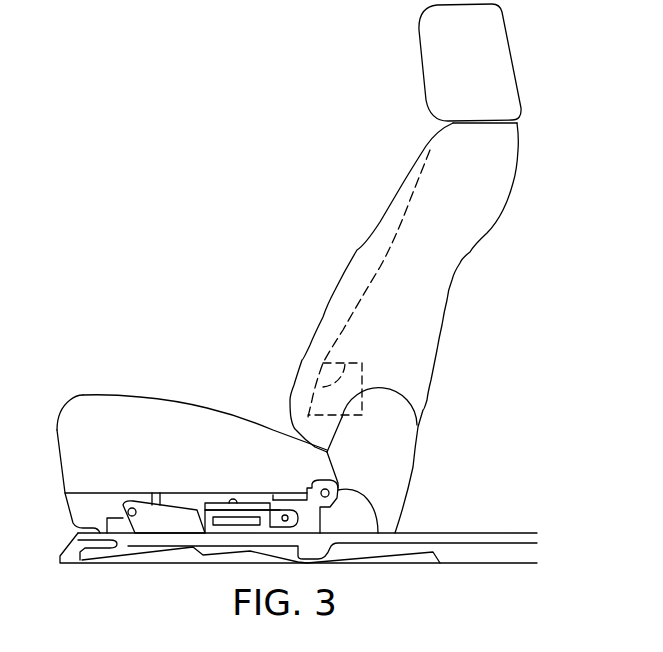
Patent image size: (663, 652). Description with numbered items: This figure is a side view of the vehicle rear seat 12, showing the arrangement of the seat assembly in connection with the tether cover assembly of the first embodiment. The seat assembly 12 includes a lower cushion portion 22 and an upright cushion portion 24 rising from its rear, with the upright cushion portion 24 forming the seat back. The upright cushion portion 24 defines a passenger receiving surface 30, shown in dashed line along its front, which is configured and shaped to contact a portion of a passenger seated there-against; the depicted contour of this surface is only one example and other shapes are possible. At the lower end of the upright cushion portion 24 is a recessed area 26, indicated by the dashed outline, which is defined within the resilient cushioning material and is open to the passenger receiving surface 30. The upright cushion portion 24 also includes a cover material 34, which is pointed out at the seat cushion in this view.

The rear seat 12 is at (118, 135).
The lower cushion portion 22 is at (143, 433).
The upright cushion portion 24 is at (487, 233).
The recessed area 26 is at (317, 383).
The passenger receiving surface 30 is at (362, 290).
The cover material 34 is at (100, 395).